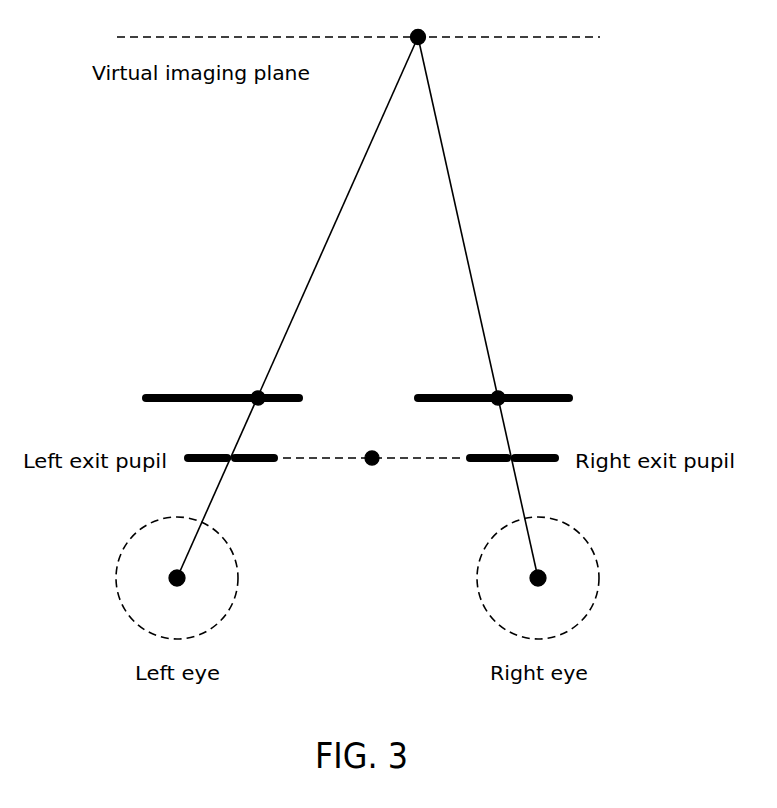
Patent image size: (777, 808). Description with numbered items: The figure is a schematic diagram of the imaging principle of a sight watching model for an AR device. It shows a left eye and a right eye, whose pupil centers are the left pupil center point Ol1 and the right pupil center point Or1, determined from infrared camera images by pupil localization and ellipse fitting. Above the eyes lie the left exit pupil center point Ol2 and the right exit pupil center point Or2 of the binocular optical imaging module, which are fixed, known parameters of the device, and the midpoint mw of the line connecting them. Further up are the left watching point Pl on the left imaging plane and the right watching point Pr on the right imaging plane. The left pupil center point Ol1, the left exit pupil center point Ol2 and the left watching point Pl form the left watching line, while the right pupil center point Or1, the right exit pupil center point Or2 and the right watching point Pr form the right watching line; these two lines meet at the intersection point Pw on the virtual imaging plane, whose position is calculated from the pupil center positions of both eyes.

The intersection point of lines of sight Pw is at (418, 26).
The left watching point Pl is at (222, 381).
The right watching point Pr is at (493, 381).
The left exit pupil center point Ol2 is at (231, 480).
The right exit pupil center point Or2 is at (506, 480).
The midpoint mw is at (368, 478).
The left pupil center point Ol1 is at (177, 578).
The right pupil center point Or1 is at (538, 578).